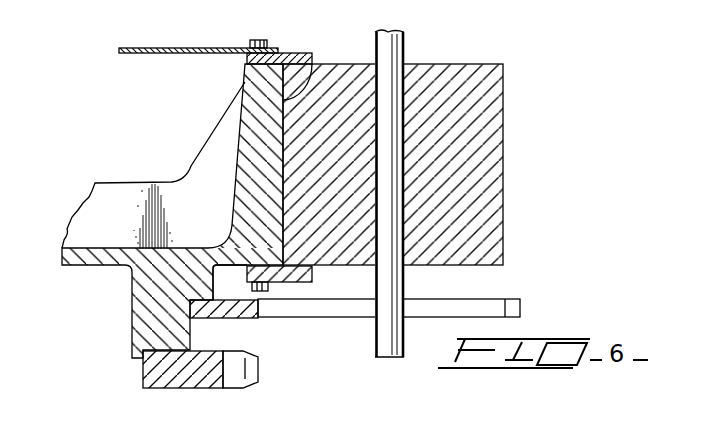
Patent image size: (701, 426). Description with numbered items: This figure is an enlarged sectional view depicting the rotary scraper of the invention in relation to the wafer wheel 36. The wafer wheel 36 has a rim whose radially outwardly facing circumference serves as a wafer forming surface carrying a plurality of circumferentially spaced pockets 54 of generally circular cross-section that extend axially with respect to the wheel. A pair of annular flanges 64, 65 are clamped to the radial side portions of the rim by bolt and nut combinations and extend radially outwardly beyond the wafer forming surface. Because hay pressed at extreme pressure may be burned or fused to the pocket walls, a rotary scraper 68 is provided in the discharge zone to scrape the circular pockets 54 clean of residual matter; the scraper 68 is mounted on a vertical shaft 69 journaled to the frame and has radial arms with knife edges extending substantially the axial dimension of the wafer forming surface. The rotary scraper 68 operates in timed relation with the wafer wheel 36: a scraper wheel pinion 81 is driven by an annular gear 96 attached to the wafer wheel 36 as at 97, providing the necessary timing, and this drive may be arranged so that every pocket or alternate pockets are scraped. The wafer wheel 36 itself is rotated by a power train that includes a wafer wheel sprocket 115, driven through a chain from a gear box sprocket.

The wafer wheel 36 is at (92, 270).
The pockets 54 is at (309, 54).
The annular flange 64 is at (312, 268).
The annular flange 65 is at (280, 52).
The rotary scraper 68 is at (483, 52).
The vertical shaft 69 is at (404, 38).
The scraper wheel pinion 81 is at (498, 300).
The annular gear 96 is at (230, 318).
The attachment location 97 is at (203, 298).
The wafer wheel sprocket 115 is at (202, 376).